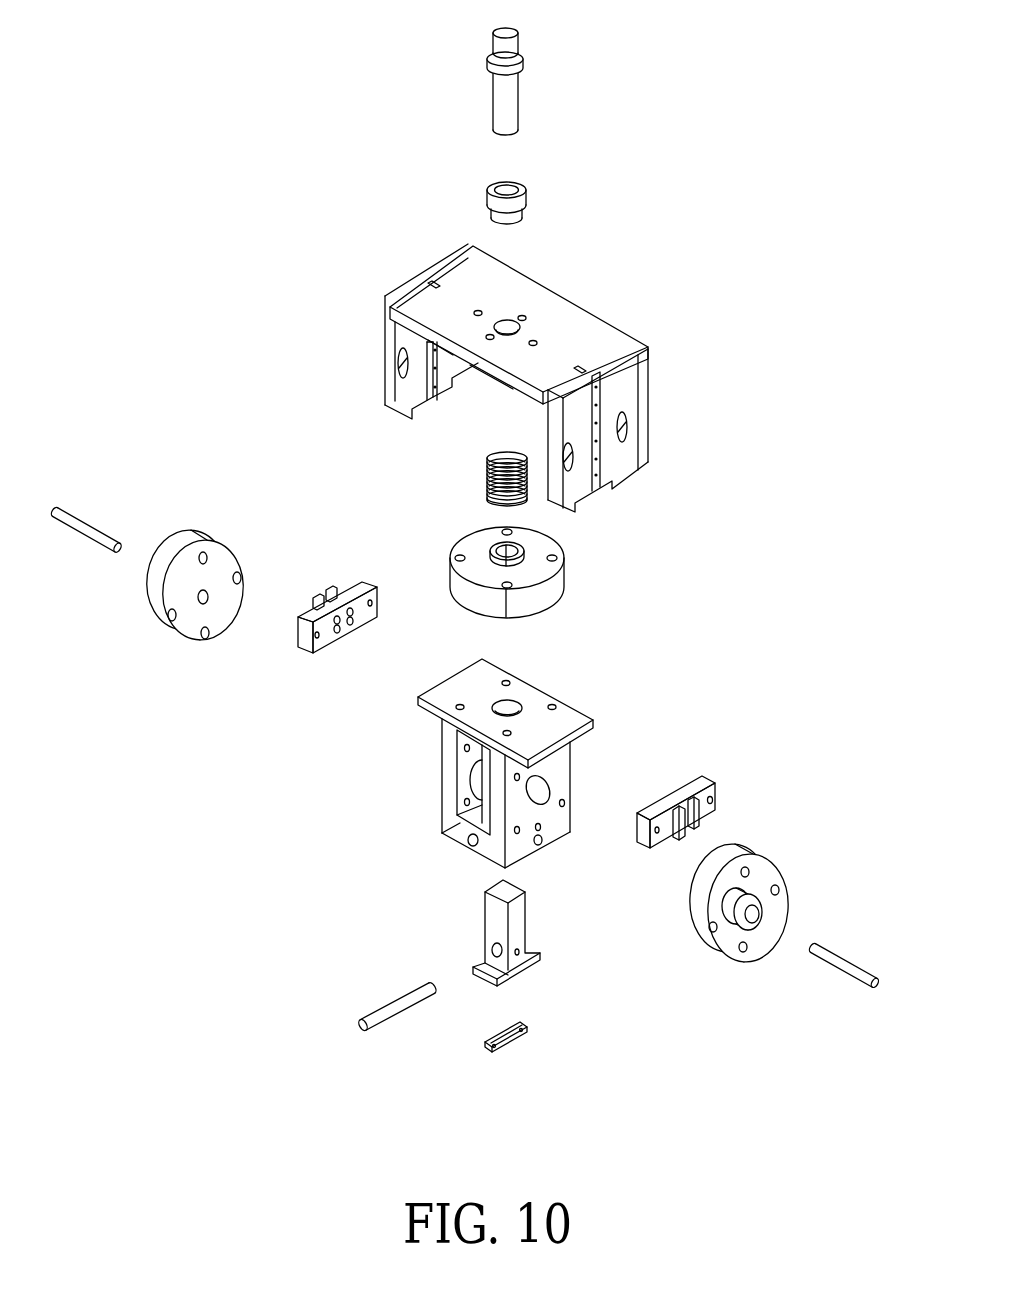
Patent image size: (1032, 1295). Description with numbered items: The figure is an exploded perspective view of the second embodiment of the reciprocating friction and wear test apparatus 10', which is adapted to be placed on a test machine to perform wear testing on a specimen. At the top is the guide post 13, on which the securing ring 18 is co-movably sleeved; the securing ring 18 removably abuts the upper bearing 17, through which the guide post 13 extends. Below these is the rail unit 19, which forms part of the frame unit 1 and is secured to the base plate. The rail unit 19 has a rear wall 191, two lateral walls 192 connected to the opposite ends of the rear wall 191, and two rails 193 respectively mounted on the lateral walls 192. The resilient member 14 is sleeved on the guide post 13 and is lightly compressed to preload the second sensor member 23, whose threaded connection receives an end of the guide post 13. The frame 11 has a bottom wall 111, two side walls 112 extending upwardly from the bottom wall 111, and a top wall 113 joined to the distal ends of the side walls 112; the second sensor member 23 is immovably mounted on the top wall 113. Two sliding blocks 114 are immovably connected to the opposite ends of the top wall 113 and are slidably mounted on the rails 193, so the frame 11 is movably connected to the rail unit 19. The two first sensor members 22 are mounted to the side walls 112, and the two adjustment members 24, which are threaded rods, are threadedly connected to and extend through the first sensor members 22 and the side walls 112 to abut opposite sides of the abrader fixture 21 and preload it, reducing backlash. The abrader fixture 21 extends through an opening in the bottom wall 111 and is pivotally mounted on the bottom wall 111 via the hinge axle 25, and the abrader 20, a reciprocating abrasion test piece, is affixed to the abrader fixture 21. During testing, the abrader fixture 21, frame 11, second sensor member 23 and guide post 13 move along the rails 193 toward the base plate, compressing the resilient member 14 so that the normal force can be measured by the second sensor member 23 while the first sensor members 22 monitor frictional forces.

The frame unit 1 is at (614, 665).
The reciprocating friction and wear test apparatus 10' is at (475, 530).
The frame 11 is at (605, 727).
The bottom wall 111 is at (452, 843).
The side walls 112 is at (432, 773).
The top wall 113 is at (568, 703).
The sliding blocks 114 is at (362, 579).
The guide post 13 is at (506, 33).
The resilient member 14 is at (489, 463).
The upper bearing 17 is at (488, 191).
The securing ring 18 is at (489, 62).
The rail unit 19 is at (650, 340).
The rear wall 191 is at (558, 297).
The lateral walls 192 is at (398, 287).
The rails 193 is at (425, 382).
The abrader 20 is at (525, 1028).
The abrader fixture 21 is at (520, 922).
The first sensor members 22 is at (158, 633).
The second sensor member 23 is at (552, 549).
The adjustment members 24 is at (92, 530).
The hinge axle 25 is at (392, 1006).